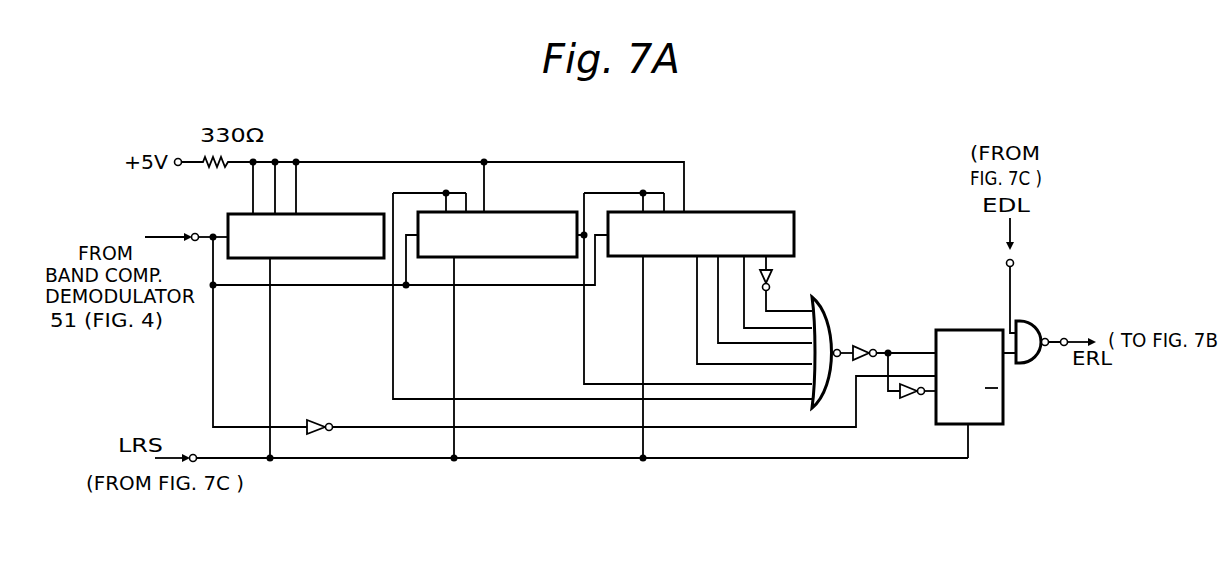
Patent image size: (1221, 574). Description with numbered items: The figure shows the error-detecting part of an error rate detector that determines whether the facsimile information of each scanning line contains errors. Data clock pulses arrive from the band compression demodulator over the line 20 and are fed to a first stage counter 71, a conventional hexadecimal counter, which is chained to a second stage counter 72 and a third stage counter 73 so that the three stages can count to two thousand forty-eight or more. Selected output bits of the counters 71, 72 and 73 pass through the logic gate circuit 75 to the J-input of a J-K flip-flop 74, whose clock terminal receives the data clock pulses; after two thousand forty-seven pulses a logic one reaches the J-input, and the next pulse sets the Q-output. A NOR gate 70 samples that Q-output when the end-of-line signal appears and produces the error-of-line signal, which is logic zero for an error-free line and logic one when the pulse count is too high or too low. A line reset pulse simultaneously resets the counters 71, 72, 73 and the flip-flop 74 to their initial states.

The line L20 20 is at (209, 234).
The NOR gate 70 is at (1040, 325).
The first stage counter 71 is at (307, 214).
The second stage counter 72 is at (513, 212).
The third stage counter 73 is at (743, 212).
The J-K flip-flop 74 is at (955, 330).
The logic gate circuit 75 is at (821, 303).